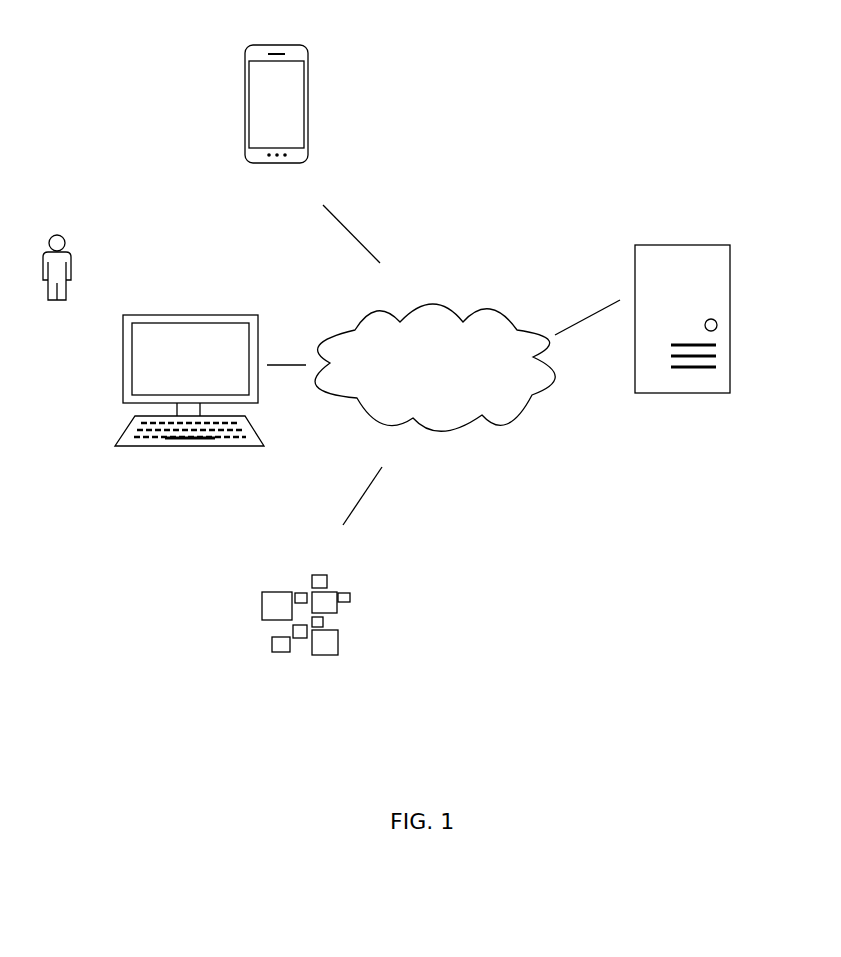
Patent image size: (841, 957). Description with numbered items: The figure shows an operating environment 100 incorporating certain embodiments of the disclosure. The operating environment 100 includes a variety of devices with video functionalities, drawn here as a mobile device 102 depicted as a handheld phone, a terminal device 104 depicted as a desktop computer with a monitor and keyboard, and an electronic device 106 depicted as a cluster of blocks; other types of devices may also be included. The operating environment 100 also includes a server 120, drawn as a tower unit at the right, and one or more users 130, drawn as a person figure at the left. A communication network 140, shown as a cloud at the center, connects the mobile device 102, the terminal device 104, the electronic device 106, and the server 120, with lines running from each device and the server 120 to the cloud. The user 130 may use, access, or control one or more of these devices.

The operating environment 100 is at (130, 67).
The mobile device 102 is at (296, 197).
The terminal device 104 is at (208, 491).
The electronic device 106 is at (326, 690).
The server 120 is at (703, 426).
The user 130 is at (78, 332).
The communication network 140 is at (435, 431).